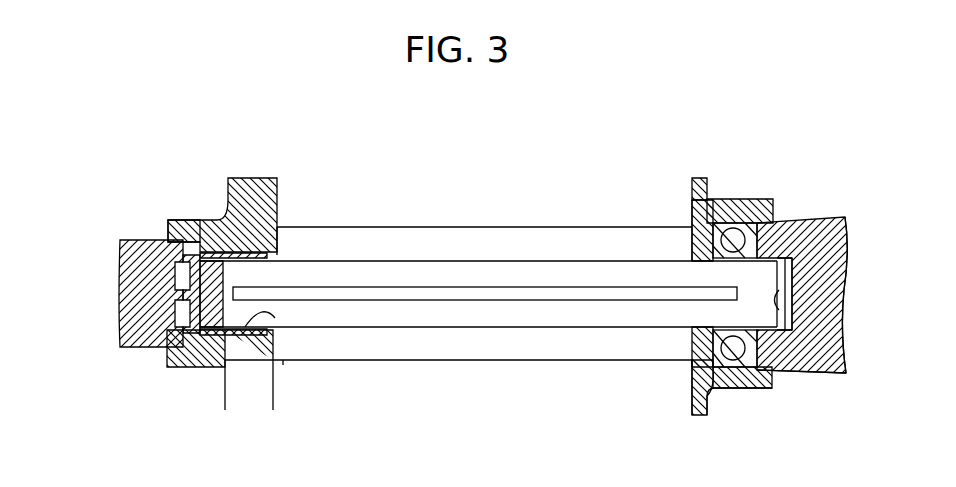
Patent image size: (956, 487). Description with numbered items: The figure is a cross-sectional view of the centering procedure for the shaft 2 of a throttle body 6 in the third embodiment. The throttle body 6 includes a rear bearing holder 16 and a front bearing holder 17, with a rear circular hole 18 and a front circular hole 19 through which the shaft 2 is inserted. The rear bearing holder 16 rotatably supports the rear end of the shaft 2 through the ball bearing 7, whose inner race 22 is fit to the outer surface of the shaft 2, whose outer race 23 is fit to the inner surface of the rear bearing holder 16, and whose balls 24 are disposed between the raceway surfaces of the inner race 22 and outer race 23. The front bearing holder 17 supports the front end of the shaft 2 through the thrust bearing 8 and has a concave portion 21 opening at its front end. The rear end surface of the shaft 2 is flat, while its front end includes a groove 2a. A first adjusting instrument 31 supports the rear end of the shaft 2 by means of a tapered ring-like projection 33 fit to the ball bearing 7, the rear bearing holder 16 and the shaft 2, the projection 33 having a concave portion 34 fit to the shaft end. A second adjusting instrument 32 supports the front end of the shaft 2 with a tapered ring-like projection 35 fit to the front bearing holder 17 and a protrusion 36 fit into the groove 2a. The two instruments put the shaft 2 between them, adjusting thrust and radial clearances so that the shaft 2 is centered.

The shaft 2 is at (412, 272).
The groove 2a is at (175, 305).
The throttle body 6 is at (700, 178).
The ball bearing 7 is at (730, 373).
The thrust bearing 8 is at (222, 367).
The rear bearing holder 16 is at (733, 210).
The front bearing holder 17 is at (230, 230).
The rear circular hole 18 is at (695, 387).
The front circular hole 19 is at (270, 263).
The concave portion 21 is at (267, 312).
The inner race 22 is at (780, 217).
The outer race 23 is at (750, 230).
The balls 24 is at (725, 240).
The first adjusting instrument 31 is at (843, 358).
The second adjusting instrument 32 is at (143, 263).
The ring-like projection 33 is at (783, 373).
The concave portion 34 is at (782, 300).
The ring-like projection 35 is at (182, 242).
The protrusion 36 is at (172, 295).